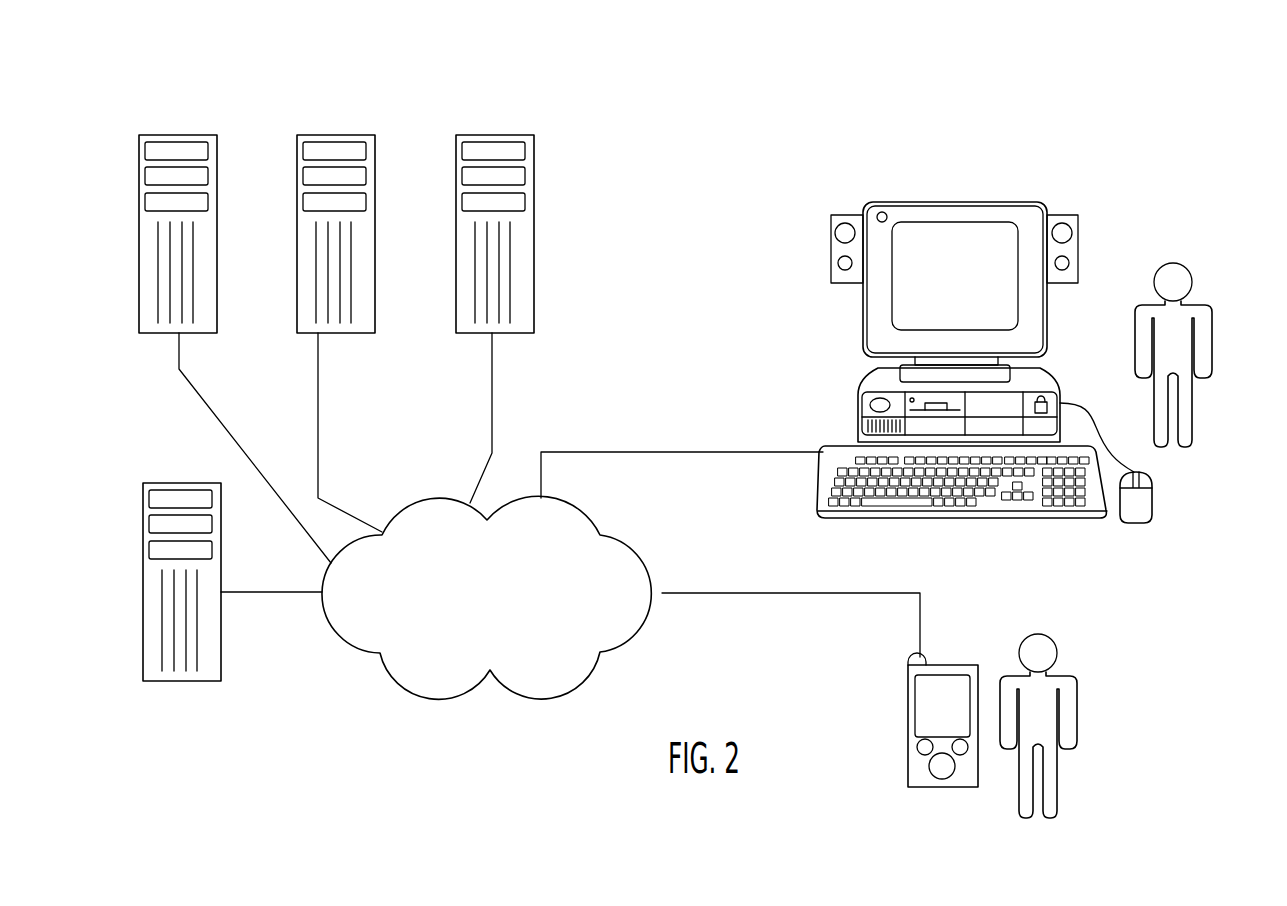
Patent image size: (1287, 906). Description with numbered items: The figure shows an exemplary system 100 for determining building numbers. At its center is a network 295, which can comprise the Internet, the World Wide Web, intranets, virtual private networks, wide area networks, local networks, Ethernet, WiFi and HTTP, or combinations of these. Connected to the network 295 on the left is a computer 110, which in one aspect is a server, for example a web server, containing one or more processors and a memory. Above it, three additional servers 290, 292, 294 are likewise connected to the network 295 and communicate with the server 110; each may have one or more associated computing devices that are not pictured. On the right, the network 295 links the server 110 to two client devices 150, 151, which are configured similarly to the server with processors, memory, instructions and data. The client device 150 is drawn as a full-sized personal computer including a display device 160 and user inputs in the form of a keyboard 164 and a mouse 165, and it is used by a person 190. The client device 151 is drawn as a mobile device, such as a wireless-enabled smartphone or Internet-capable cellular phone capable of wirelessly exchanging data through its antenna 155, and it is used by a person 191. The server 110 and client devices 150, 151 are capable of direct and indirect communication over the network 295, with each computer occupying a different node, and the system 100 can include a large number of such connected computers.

The system 100 is at (755, 117).
The computer 110 is at (178, 483).
The client device 150 is at (858, 407).
The client device 151 is at (906, 740).
The antenna 155 is at (905, 662).
The display device 160 is at (967, 202).
The keyboard 164 is at (1010, 519).
The mouse 165 is at (1140, 525).
The person 190 is at (1212, 350).
The person 191 is at (1077, 716).
The additional server 290 is at (190, 135).
The additional server 292 is at (338, 135).
The additional server 294 is at (492, 135).
The network 295 is at (388, 667).